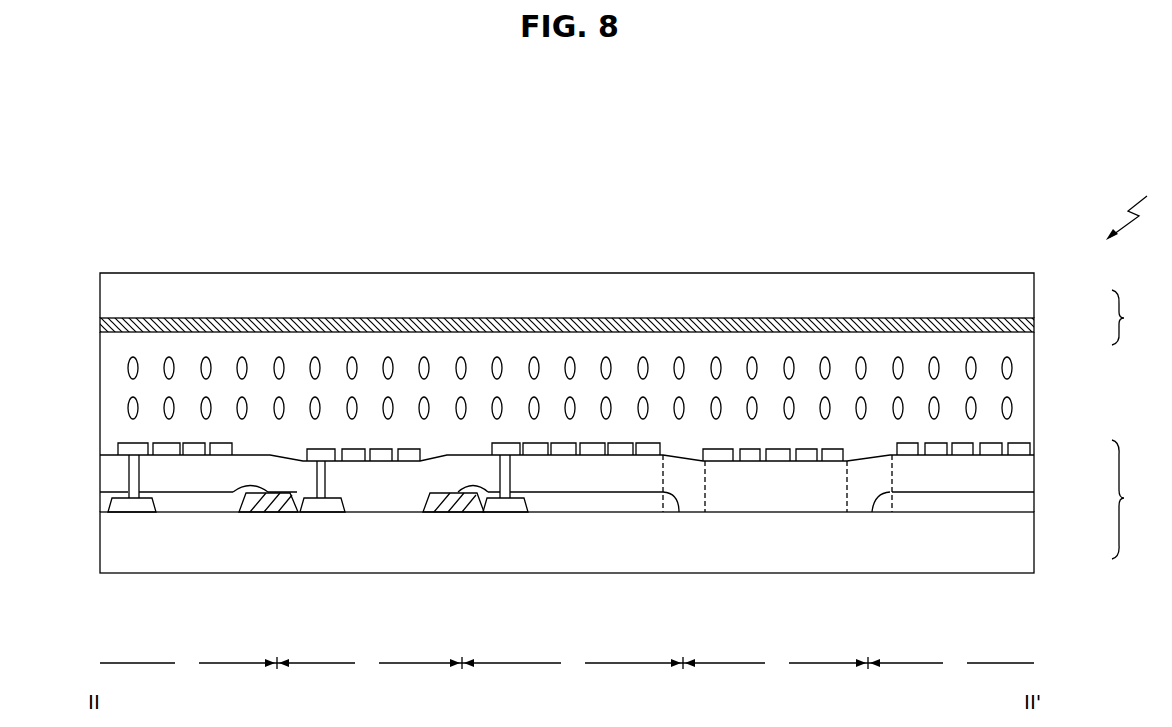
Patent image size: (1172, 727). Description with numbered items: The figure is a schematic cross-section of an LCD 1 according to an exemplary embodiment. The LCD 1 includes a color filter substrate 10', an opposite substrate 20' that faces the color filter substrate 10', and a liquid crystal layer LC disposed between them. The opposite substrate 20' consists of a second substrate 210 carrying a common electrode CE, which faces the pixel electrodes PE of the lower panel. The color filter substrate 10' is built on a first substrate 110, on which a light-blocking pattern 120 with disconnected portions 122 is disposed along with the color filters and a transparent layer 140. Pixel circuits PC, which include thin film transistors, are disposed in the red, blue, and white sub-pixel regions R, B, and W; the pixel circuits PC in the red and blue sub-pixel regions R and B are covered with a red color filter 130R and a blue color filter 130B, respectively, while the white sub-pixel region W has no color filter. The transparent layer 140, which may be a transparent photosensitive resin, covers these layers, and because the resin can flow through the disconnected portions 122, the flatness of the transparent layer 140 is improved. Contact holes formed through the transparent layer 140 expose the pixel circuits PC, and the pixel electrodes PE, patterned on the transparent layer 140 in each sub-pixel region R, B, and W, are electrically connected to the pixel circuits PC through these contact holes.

The LCD 1 is at (1135, 210).
The second substrate 210 is at (1020, 297).
The common electrode CE is at (1030, 327).
The opposite substrate 20' is at (1137, 317).
The liquid crystal layer LC is at (1020, 385).
The pixel electrodes PE is at (1030, 456).
The transparent layer 140 is at (1020, 477).
The color filter substrate 10' is at (1137, 499).
The first substrate 110 is at (1020, 543).
The pixel circuits PC is at (505, 590).
The blue color filter 130B is at (945, 590).
The red color filter 130R is at (583, 502).
The light-blocking pattern 120 is at (455, 590).
The disconnected portions 122 is at (858, 590).
The blue sub-pixel region B is at (567, 663).
The white sub-pixel region W is at (572, 663).
The red sub-pixel region R is at (572, 663).